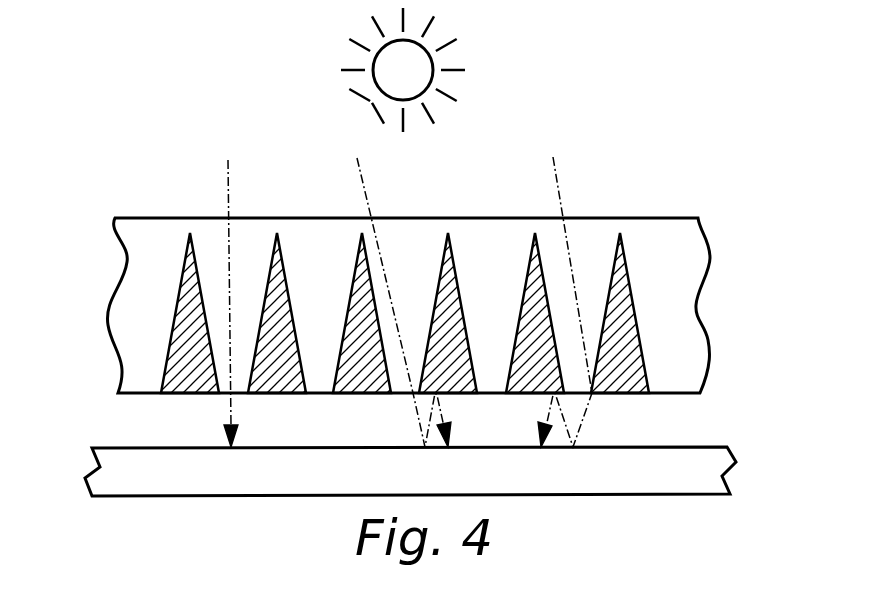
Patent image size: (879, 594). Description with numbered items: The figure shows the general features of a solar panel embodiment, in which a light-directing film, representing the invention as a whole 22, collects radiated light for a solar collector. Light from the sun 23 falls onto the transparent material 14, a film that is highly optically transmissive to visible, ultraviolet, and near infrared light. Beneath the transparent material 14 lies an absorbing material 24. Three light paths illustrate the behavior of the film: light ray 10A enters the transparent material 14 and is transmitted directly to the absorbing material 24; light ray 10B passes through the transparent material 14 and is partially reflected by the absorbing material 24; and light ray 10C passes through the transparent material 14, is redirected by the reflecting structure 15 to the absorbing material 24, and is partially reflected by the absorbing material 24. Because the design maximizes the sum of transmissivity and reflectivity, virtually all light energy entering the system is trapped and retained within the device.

The light ray 10A is at (228, 192).
The light ray 10B is at (365, 193).
The light ray 10C is at (563, 198).
The transparent material 14 is at (127, 260).
The reflecting structure 15 is at (177, 300).
The invention as a whole 22 is at (420, 305).
The sun 23 is at (433, 62).
The absorbing material 24 is at (106, 447).